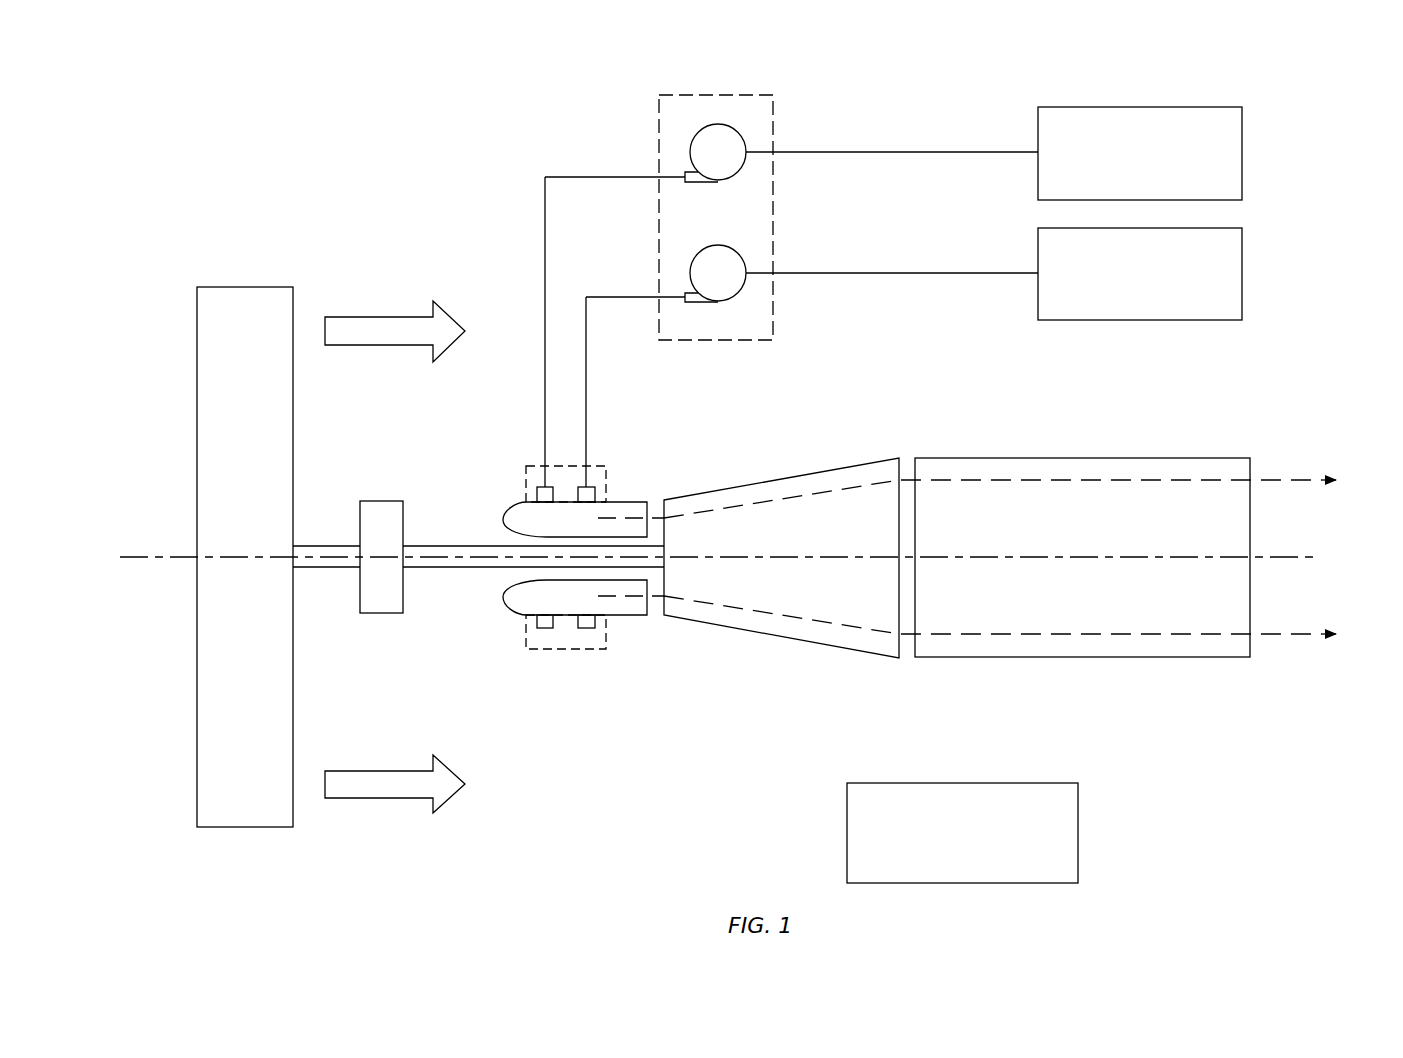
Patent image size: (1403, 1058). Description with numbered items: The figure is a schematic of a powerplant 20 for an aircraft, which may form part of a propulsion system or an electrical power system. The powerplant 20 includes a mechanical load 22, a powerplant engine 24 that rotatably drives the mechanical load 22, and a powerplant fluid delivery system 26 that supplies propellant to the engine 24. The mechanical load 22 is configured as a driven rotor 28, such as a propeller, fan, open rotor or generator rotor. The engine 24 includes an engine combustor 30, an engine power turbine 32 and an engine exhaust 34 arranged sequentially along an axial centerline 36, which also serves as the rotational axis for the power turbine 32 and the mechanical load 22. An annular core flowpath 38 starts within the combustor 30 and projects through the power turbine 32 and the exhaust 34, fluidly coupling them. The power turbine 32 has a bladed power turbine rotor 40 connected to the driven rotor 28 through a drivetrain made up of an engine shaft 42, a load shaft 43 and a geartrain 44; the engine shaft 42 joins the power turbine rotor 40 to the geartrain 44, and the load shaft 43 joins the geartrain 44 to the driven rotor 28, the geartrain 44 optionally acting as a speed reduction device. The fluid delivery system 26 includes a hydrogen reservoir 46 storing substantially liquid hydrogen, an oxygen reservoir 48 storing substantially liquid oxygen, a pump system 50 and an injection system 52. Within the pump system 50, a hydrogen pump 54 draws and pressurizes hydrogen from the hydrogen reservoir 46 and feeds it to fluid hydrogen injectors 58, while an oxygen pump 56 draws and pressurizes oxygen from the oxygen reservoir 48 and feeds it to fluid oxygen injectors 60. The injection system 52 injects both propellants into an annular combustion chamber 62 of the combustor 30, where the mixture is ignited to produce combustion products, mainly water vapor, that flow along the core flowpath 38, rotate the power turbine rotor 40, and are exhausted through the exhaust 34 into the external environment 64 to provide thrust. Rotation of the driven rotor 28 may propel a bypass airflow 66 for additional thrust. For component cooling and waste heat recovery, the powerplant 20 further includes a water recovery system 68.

The powerplant 20 is at (340, 104).
The mechanical load 22 is at (202, 513).
The powerplant engine 24 is at (1031, 603).
The powerplant fluid delivery system 26 is at (937, 252).
The driven rotor 28 is at (197, 342).
The engine combustor 30 is at (544, 546).
The engine power turbine 32 is at (781, 599).
The engine exhaust 34 is at (1031, 576).
The axial centerline 36 is at (127, 562).
The core flowpath 38 is at (1031, 478).
The power turbine rotor 40 is at (734, 628).
The engine shaft 42 is at (420, 546).
The load shaft 43 is at (333, 546).
The geartrain 44 is at (378, 501).
The hydrogen reservoir 46 is at (1243, 152).
The oxygen reservoir 48 is at (1243, 258).
The pump system 50 is at (791, 180).
The injection system 52 is at (566, 546).
The hydrogen pump 54 is at (740, 172).
The oxygen pump 56 is at (740, 292).
The fluid hydrogen injectors 58 is at (537, 497).
The fluid oxygen injectors 60 is at (595, 497).
The combustion chamber 62 is at (557, 529).
The external environment 64 is at (1370, 532).
The airflow 66 is at (378, 317).
The water recovery system 68 is at (843, 830).